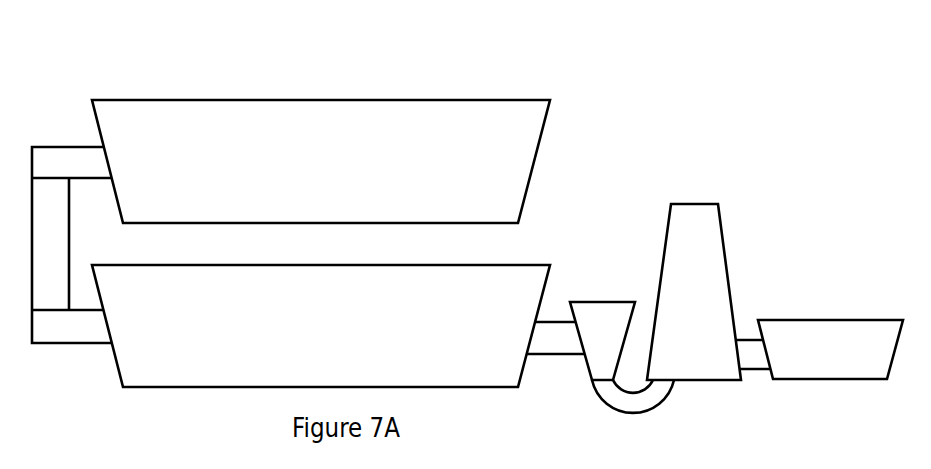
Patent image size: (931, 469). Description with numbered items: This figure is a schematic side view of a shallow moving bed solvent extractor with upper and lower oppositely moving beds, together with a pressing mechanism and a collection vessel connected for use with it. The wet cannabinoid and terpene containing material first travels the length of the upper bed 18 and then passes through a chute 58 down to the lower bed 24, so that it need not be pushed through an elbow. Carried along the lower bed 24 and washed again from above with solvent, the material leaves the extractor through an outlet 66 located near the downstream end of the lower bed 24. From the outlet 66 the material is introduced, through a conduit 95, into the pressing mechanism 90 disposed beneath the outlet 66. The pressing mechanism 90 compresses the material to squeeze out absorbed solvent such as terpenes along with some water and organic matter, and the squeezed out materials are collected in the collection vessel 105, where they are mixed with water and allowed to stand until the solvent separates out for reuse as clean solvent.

The upper bed 18 is at (221, 123).
The lower bed 24 is at (184, 352).
The chute 58 is at (55, 245).
The outlet 66 is at (584, 385).
The pressing mechanism 90 is at (709, 330).
The conduit 95 is at (638, 398).
The collection vessel 105 is at (852, 361).